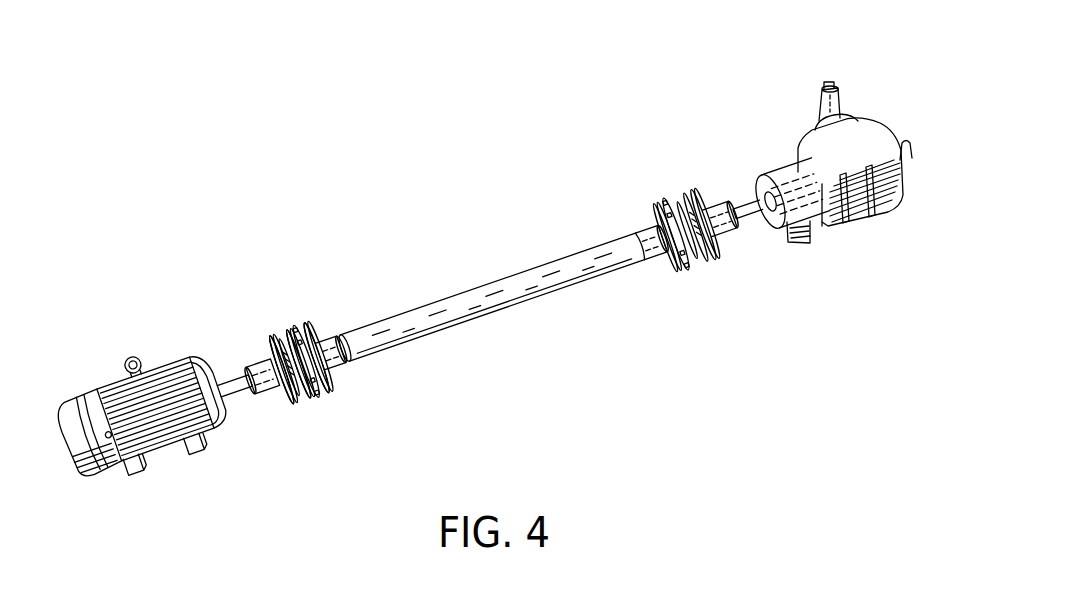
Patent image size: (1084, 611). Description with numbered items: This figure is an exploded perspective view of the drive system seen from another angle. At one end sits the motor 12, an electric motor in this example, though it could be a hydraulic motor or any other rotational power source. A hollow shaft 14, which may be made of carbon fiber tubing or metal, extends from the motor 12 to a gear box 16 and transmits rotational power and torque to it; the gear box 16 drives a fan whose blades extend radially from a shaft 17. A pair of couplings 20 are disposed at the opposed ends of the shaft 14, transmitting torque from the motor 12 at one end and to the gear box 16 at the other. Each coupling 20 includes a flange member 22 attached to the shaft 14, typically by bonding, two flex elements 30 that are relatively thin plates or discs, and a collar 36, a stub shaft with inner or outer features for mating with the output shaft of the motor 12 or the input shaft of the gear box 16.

The motor 12 is at (88, 348).
The shaft 14 is at (481, 255).
The gear box 16 is at (924, 105).
The shaft 17 is at (820, 113).
The couplings 20 is at (310, 302).
The flange member 22 is at (328, 385).
The flex elements 30 is at (292, 398).
The collar 36 is at (257, 366).